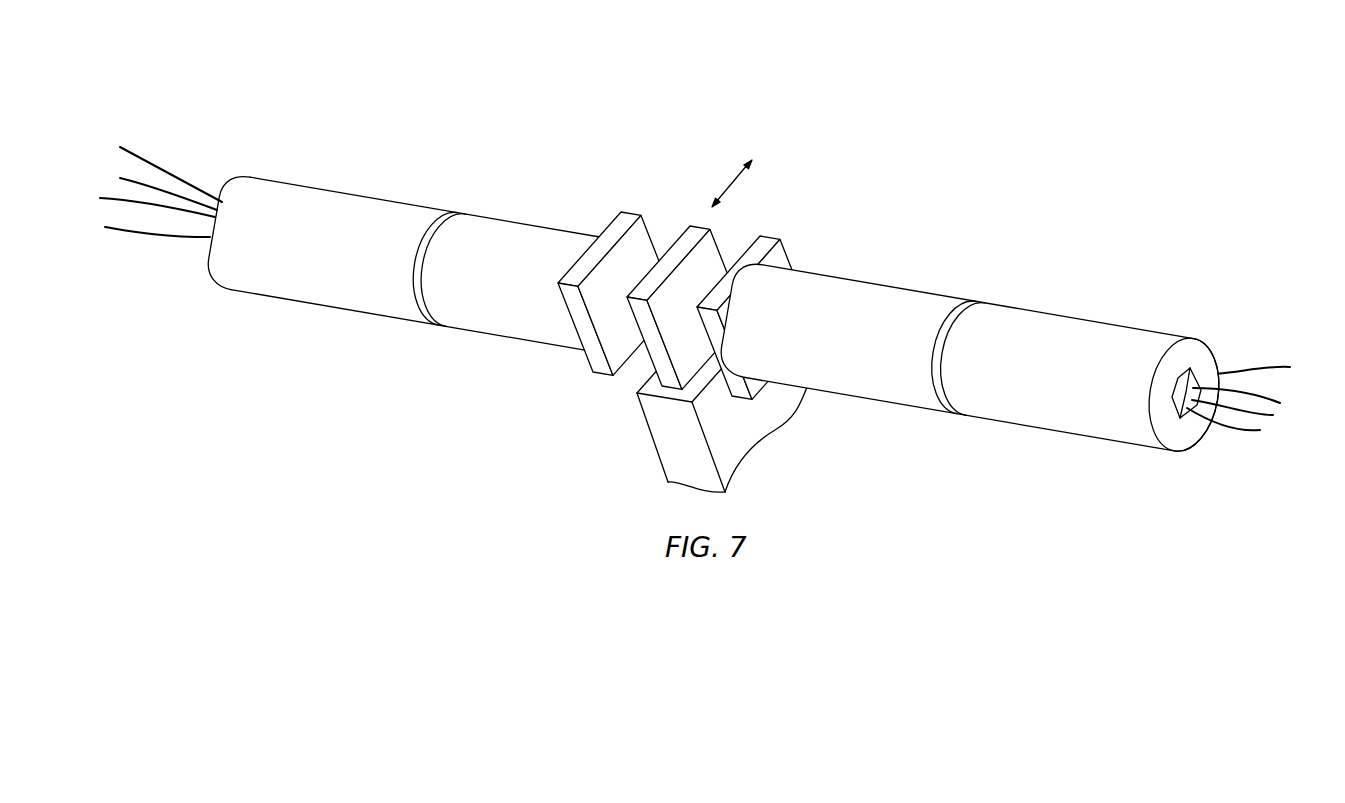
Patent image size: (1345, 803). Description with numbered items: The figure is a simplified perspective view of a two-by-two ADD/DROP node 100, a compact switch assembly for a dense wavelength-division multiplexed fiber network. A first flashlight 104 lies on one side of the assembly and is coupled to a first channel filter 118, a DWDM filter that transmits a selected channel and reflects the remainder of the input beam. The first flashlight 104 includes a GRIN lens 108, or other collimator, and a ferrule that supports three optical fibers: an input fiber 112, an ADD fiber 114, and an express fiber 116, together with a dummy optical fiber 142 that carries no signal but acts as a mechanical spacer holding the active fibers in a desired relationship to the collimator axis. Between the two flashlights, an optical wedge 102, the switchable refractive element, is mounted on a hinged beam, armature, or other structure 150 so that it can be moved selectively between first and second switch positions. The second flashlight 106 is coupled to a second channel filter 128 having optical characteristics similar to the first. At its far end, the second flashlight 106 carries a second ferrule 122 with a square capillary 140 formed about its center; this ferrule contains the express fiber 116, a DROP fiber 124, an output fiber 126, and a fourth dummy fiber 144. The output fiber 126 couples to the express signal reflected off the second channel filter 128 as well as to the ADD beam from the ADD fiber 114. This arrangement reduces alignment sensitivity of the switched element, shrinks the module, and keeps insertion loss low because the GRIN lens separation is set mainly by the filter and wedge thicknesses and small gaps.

The ADD/DROP node 100 is at (925, 105).
The optical wedge 102 is at (685, 230).
The first flashlight 104 is at (430, 187).
The second flashlight 106 is at (1013, 272).
The GRIN lens 108 is at (530, 228).
The input fiber 112 is at (120, 178).
The ADD fiber 114 is at (120, 147).
The express fiber 116 is at (100, 198).
The first channel filter 118 is at (627, 215).
The second ferrule 122 is at (1102, 320).
The DROP fiber 124 is at (1243, 430).
The output fiber 126 is at (1268, 418).
The second channel filter 128 is at (765, 238).
The square capillary 140 is at (1197, 370).
The dummy optical fiber 142 is at (105, 228).
The dummy fiber 144 is at (1273, 390).
The hinged structure 150 is at (660, 442).